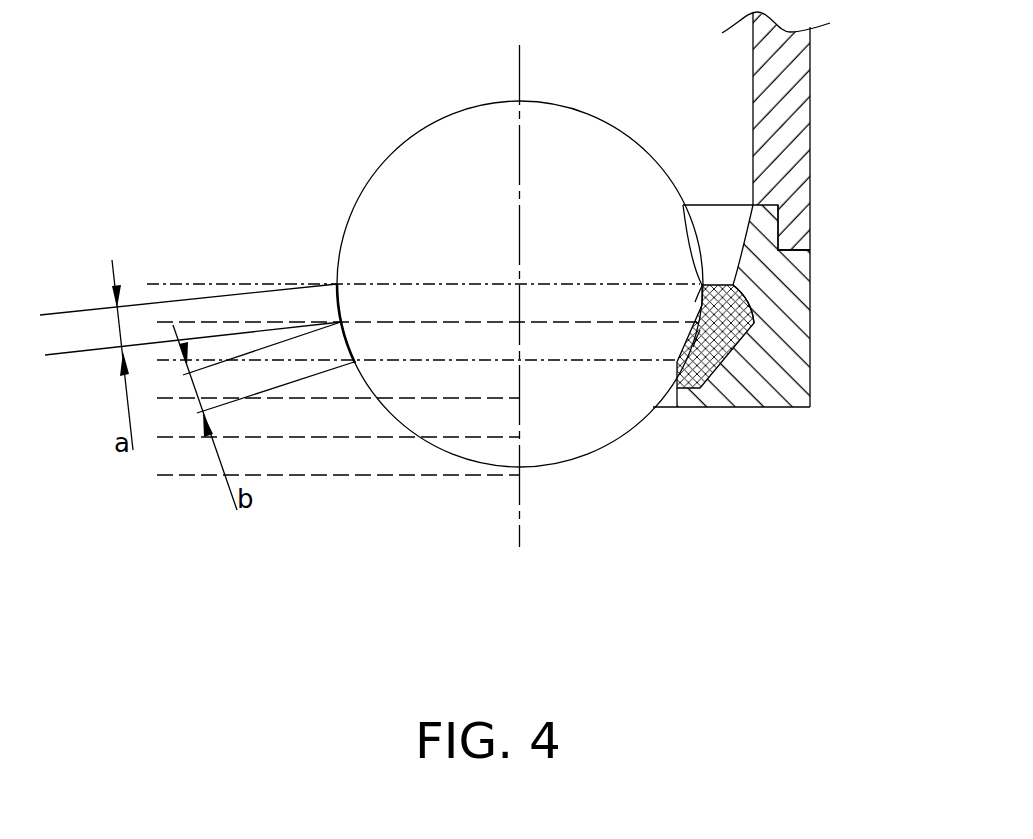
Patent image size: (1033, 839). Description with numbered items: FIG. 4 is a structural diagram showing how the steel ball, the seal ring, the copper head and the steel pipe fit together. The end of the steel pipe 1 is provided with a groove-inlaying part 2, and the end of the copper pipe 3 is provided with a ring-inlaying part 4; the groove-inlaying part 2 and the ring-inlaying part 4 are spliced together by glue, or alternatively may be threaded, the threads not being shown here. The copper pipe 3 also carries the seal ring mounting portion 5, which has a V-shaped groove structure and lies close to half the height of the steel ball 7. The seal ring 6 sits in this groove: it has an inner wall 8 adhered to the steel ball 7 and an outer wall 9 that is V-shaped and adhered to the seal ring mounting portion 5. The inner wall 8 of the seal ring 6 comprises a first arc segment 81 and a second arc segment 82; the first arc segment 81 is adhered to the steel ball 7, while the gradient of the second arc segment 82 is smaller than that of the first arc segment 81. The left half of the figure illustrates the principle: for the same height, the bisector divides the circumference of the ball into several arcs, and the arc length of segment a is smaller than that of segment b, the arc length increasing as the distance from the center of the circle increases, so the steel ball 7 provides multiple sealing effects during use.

The steel pipe 1 is at (812, 138).
The groove-inlaying part 2 is at (778, 230).
The copper pipe 3 is at (814, 378).
The ring-inlaying part 4 is at (778, 208).
The seal ring mounting portion 5 is at (747, 357).
The seal ring 6 is at (717, 283).
The steel ball 7 is at (580, 422).
The inner wall 8 is at (337, 67).
The first arc segment 81 is at (705, 300).
The second arc segment 82 is at (693, 347).
The outer wall 9 is at (753, 322).